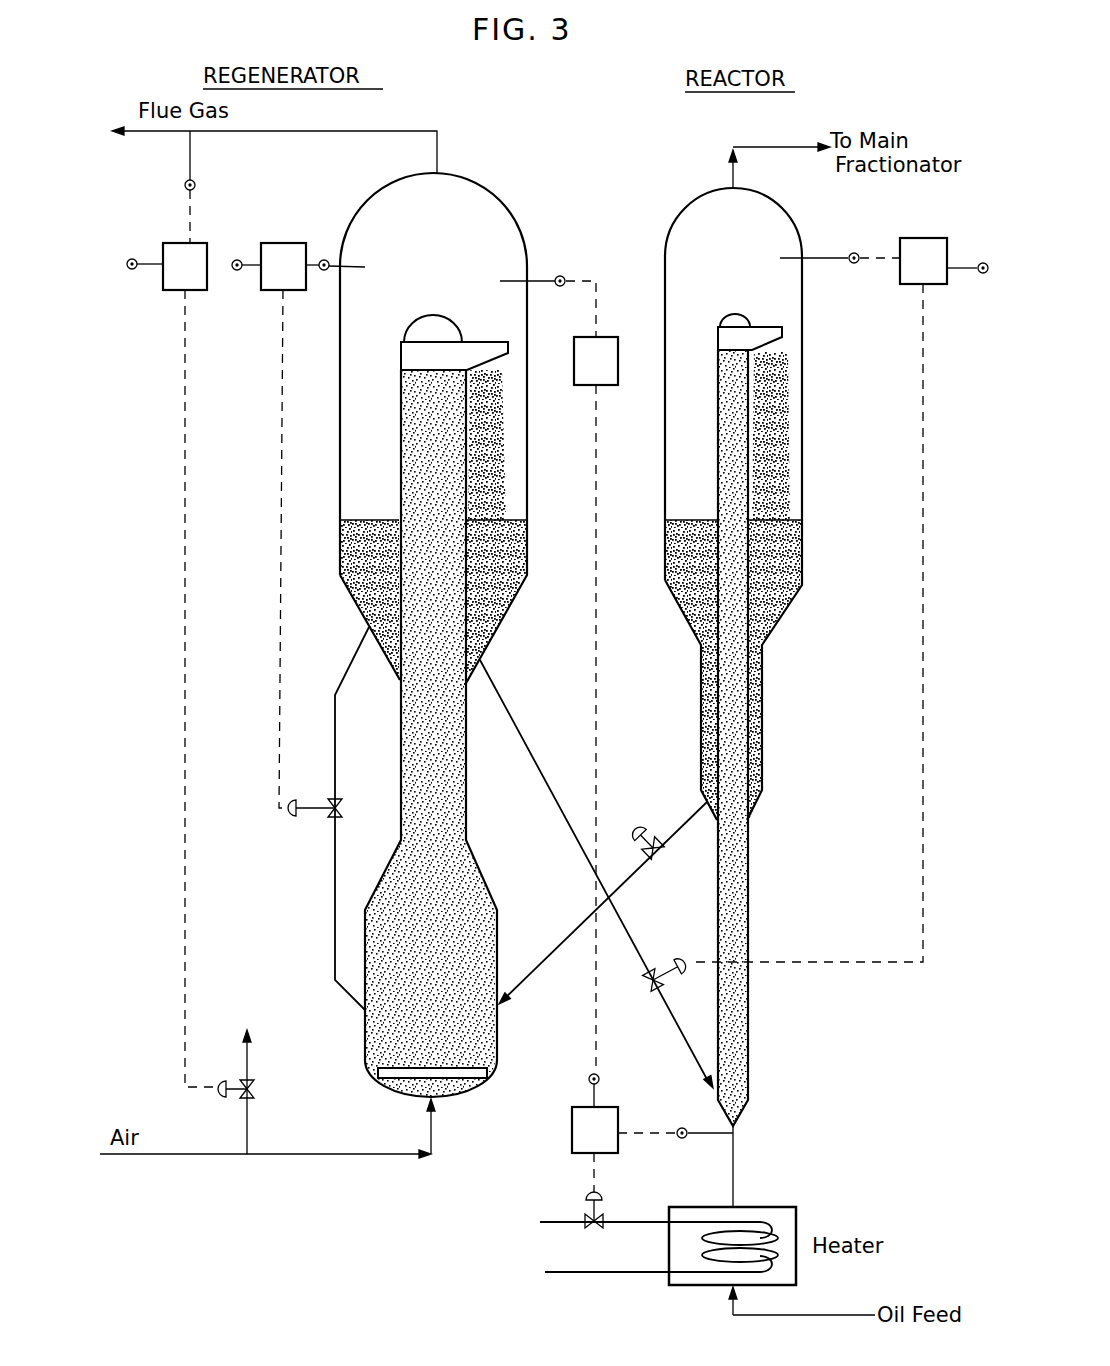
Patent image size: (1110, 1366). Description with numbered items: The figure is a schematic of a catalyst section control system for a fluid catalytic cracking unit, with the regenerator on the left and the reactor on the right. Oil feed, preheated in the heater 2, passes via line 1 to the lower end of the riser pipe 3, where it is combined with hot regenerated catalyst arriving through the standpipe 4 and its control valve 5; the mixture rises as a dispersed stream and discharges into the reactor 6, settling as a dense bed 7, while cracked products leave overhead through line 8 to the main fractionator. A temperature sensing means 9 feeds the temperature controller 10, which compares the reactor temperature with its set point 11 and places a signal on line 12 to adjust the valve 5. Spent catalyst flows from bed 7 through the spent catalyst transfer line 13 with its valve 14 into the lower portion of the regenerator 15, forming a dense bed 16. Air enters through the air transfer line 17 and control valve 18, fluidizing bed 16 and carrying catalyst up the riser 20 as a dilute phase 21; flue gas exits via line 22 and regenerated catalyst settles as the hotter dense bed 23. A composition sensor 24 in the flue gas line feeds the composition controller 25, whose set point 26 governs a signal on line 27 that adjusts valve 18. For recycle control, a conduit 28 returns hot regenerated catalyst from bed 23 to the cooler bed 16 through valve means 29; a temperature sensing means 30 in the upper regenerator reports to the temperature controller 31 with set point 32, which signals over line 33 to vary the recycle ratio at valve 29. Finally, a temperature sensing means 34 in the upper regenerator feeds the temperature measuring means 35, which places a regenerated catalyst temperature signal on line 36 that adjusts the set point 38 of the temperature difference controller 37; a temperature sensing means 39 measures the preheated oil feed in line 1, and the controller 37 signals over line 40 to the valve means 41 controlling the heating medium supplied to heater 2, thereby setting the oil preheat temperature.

The oil feed line 1 is at (735, 1168).
The heater 2 is at (768, 1207).
The riser pipe 3 is at (748, 932).
The standpipe 4 is at (673, 1008).
The control valve 5 is at (679, 962).
The reactor 6 is at (803, 472).
The dense bed 7 is at (733, 586).
The products line 8 is at (742, 142).
The temperature sensing means 9 is at (812, 254).
The temperature controller 10 is at (920, 238).
The set point 11 is at (983, 262).
The signal line 12 is at (924, 472).
The spent catalyst transfer line 13 is at (688, 813).
The valve 14 is at (648, 858).
The regenerator 15 is at (340, 466).
The dense bed 16 is at (432, 1016).
The air transfer line 17 is at (352, 1157).
The control valve 18 is at (255, 1088).
The riser 20 is at (400, 742).
The dilute phase 21 is at (431, 733).
The flue gas line 22 is at (439, 162).
The regenerated catalyst bed 23 is at (433, 527).
The composition sensor 24 is at (192, 160).
The composition controller 25 is at (207, 243).
The set point 26 is at (129, 258).
The signal line 27 is at (184, 474).
The conduit 28 is at (334, 727).
The valve means 29 is at (332, 815).
The temperature sensing means 30 is at (323, 272).
The temperature controller 31 is at (284, 243).
The set point 32 is at (236, 271).
The signal line 33 is at (278, 514).
The temperature sensing means 34 is at (541, 276).
The temperature measuring means 35 is at (608, 337).
The signal line 36 is at (597, 488).
The temperature difference controller 37 is at (572, 1138).
The set point 38 is at (588, 1077).
The temperature sensing means 39 is at (716, 1130).
The signal line 40 is at (585, 1179).
The valve means 41 is at (600, 1196).